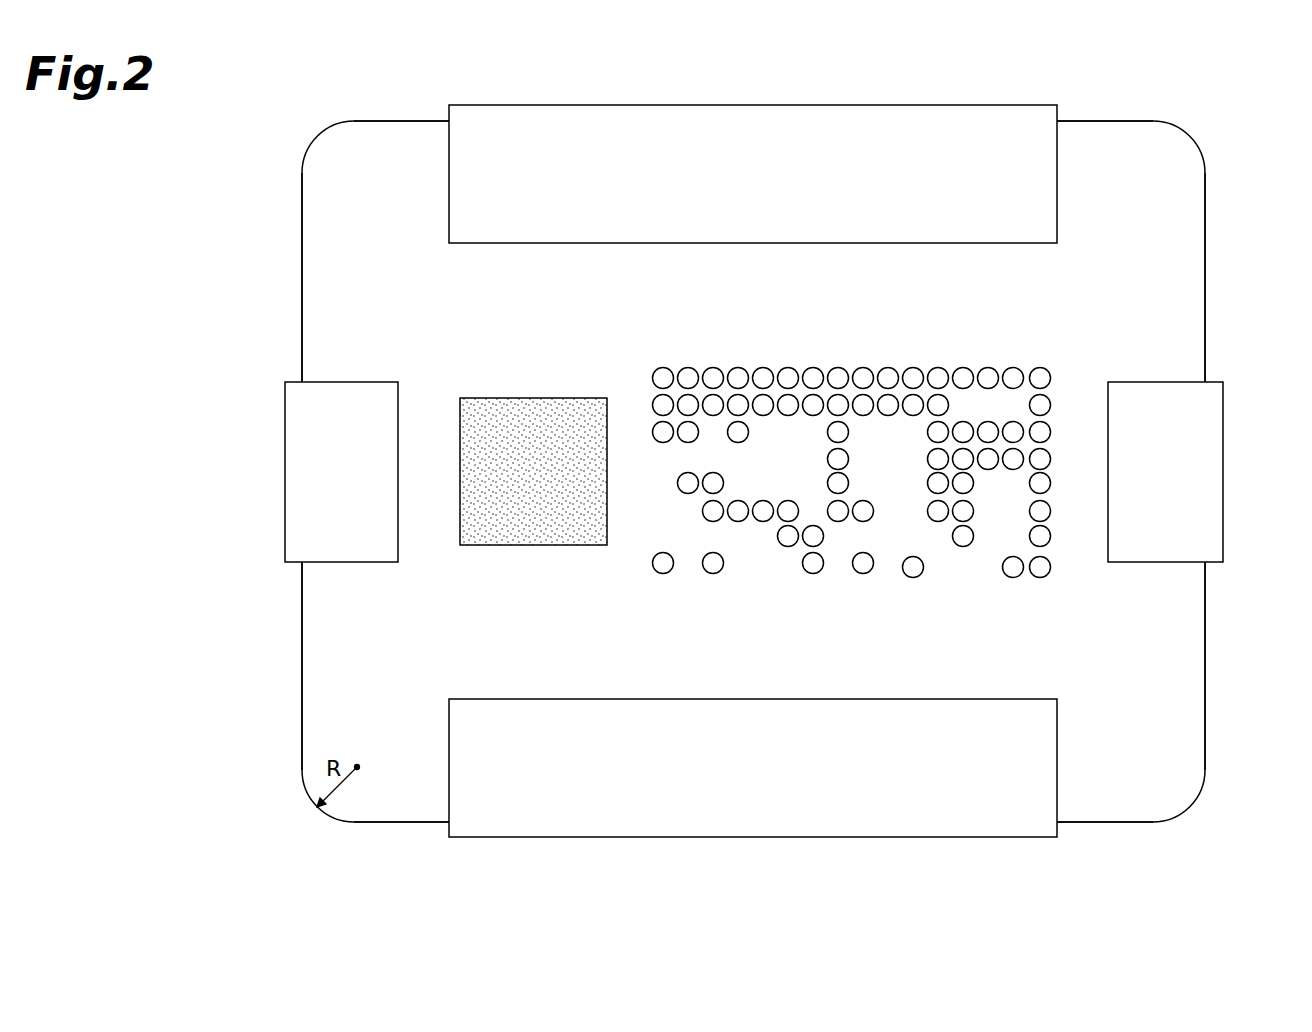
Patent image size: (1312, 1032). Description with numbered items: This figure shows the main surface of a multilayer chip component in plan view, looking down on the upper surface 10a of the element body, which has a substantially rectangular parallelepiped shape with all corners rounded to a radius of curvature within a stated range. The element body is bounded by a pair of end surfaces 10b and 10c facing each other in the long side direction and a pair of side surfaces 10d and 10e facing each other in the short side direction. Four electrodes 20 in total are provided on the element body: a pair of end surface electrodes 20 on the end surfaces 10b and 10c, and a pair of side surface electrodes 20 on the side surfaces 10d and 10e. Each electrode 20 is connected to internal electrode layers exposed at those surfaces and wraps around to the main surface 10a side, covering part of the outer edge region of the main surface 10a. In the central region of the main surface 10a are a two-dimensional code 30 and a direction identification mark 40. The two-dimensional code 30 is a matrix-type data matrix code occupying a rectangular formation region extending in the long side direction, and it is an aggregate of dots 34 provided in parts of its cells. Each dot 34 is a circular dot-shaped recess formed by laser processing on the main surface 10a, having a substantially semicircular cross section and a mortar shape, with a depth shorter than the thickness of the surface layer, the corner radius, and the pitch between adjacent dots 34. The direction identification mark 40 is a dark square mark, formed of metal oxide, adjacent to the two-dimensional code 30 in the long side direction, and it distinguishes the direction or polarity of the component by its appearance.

The upper surface 10a is at (1074, 297).
The end surface 10b is at (302, 323).
The end surface 10c is at (1205, 315).
The side surface 10d is at (1128, 823).
The side surface 10e is at (1093, 120).
The electrode 20 is at (786, 105).
The two-dimensional code 30 is at (658, 368).
The dot 34 is at (787, 367).
The direction identification mark 40 is at (502, 412).